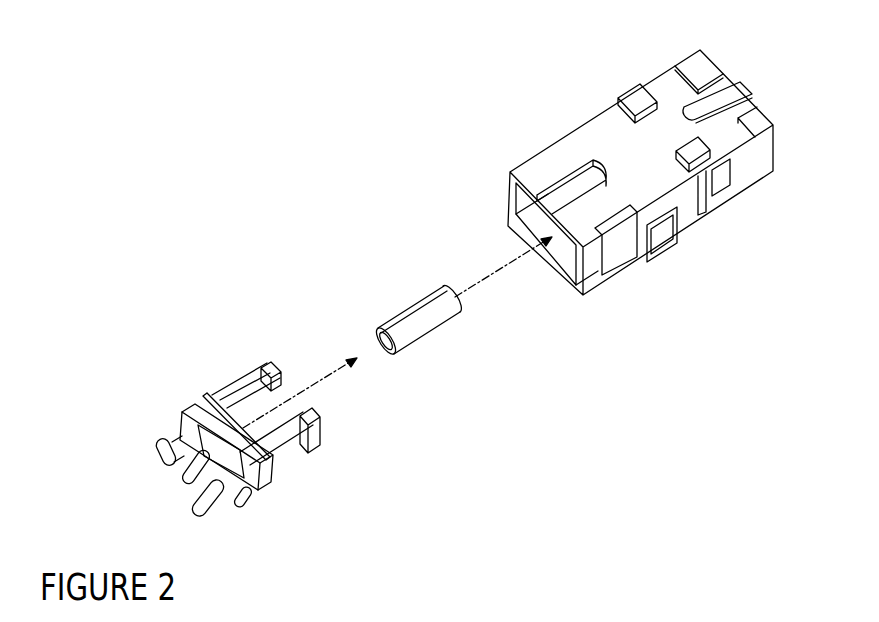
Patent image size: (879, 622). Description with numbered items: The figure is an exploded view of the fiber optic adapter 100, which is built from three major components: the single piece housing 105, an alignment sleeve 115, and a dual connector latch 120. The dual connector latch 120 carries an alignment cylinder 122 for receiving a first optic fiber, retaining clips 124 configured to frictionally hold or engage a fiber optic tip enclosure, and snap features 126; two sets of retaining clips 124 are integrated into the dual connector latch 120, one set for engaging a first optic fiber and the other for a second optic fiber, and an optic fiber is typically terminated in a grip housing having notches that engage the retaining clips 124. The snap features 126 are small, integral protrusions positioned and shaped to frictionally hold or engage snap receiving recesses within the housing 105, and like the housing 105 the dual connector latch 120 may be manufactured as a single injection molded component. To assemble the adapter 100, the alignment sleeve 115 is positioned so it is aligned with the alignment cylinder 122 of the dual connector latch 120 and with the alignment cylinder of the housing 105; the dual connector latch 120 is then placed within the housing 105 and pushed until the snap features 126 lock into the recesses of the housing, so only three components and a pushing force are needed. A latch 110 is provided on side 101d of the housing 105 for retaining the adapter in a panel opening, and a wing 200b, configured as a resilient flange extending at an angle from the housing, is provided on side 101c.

The adapter 100 is at (255, 177).
The side of the housing 101c is at (665, 100).
The side of the housing 101d is at (640, 237).
The single piece housing 105 is at (543, 172).
The latch 110 is at (717, 197).
The alignment sleeve 115 is at (424, 343).
The dual connector latch 120 is at (190, 412).
The alignment cylinder 122 is at (193, 480).
The retaining clips 124 is at (322, 440).
The snap features 126 is at (250, 503).
The wing 200b is at (696, 165).